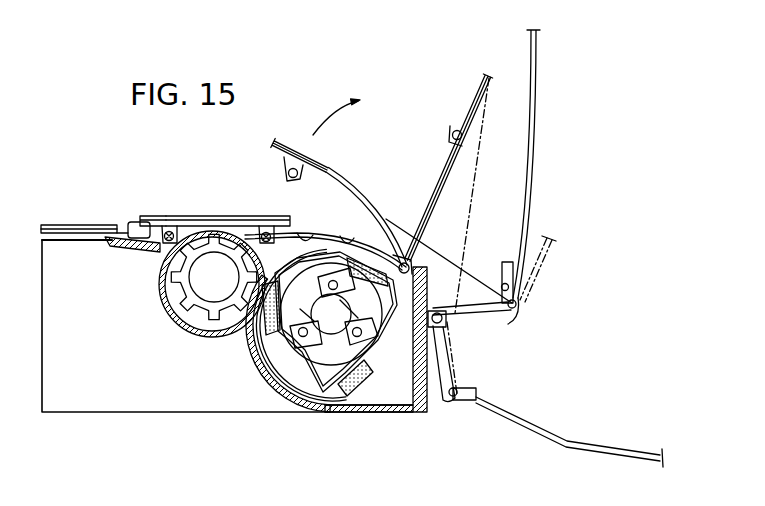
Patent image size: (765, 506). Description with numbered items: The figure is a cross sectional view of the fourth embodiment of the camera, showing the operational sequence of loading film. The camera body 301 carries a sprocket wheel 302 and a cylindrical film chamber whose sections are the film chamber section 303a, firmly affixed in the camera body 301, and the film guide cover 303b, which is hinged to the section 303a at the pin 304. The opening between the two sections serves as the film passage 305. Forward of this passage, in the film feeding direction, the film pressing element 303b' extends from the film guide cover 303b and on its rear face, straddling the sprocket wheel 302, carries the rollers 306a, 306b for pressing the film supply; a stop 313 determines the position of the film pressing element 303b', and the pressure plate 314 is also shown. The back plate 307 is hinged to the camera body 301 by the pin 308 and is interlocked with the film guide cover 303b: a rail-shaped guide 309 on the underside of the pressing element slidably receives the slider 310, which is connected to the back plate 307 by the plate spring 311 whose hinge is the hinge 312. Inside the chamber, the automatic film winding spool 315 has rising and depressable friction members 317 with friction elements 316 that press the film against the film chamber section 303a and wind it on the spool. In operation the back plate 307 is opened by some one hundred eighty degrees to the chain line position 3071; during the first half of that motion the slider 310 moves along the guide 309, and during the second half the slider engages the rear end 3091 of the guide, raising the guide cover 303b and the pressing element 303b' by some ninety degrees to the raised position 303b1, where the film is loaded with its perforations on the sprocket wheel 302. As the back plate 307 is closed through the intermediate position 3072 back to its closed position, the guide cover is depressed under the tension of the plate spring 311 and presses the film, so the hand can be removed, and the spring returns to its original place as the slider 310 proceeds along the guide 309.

The camera body 301 is at (127, 413).
The sprocket wheel 302 is at (182, 290).
The cylindrical film chamber section 303a is at (283, 366).
The film guide cover 303b is at (350, 203).
The film pressing element 303b' is at (228, 210).
The raised position of film guide cover 303b1 is at (496, 91).
The pin 304 is at (405, 262).
The film passage 305 is at (262, 256).
The roller 306a is at (167, 243).
The roller 306b is at (265, 231).
The back plate 307 is at (537, 90).
The fully opened position of back plate 3071 is at (579, 443).
The intermediate position of back plate 3072 is at (553, 248).
The pin 308 is at (450, 334).
The rail-shaped guide 309 is at (158, 216).
The rear end of guide 3091 is at (300, 231).
The slider 310 is at (276, 224).
The plate spring 311 is at (505, 287).
The hinge 312 is at (520, 306).
The stop 313 is at (130, 228).
The pressure plate 314 is at (70, 226).
The automatic film winding spool 315 is at (313, 350).
The friction element 316 is at (362, 378).
The friction member 317 is at (322, 407).